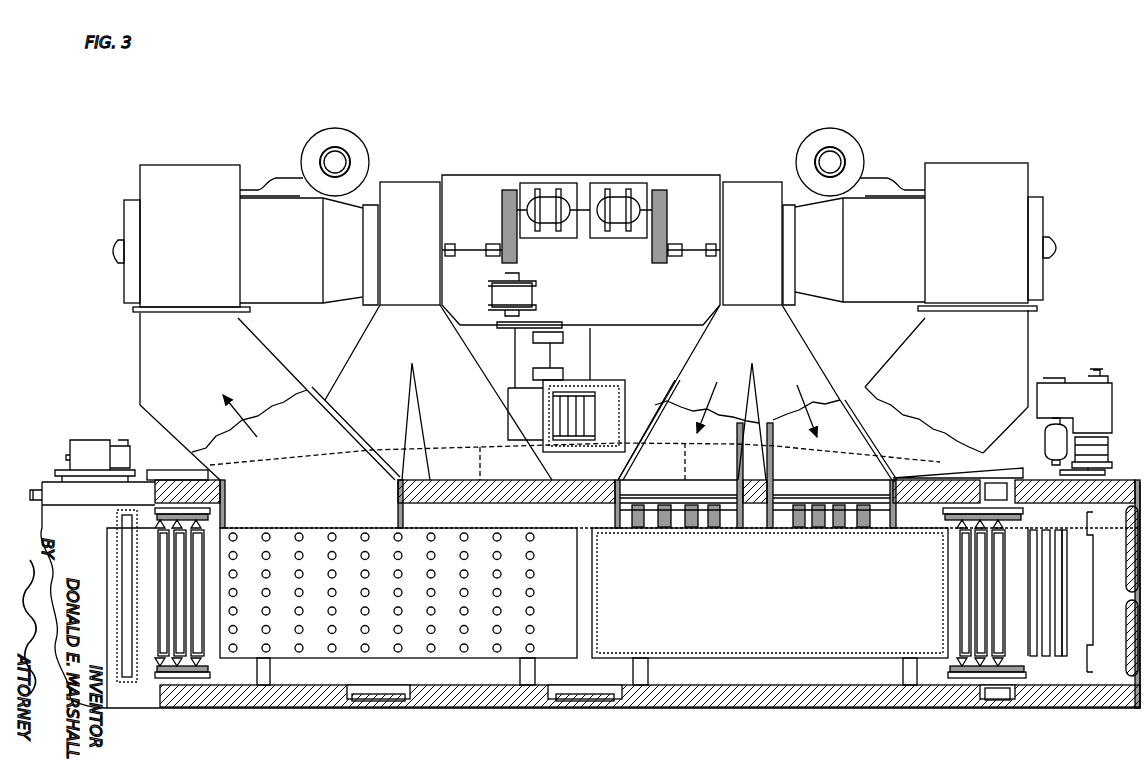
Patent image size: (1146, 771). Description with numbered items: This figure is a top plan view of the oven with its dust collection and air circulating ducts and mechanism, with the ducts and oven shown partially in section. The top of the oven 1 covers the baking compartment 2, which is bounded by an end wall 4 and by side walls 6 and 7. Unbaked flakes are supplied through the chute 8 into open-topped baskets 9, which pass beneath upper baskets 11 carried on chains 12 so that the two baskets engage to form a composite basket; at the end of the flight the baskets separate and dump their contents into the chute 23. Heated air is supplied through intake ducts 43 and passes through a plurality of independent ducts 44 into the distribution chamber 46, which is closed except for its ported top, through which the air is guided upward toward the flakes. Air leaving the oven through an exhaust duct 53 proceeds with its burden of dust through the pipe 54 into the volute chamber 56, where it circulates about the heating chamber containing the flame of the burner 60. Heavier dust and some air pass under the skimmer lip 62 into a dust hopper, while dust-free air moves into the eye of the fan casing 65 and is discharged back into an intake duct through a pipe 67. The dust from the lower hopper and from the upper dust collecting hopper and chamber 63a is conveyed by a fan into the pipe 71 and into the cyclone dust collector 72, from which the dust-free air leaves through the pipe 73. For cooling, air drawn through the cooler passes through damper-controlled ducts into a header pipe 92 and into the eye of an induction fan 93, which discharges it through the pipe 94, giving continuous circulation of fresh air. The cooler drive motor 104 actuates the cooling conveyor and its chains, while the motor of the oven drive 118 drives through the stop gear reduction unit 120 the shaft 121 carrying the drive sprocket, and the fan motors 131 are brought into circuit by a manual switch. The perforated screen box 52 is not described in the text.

The top of the oven 1 is at (148, 690).
The baking compartment 2 is at (500, 675).
The end wall 4 is at (1126, 635).
The side wall 6 is at (548, 497).
The side wall 7 is at (720, 706).
The chute 8 is at (117, 546).
The baskets 9 is at (1050, 598).
The baskets 11 is at (200, 572).
The chains 12 is at (213, 518).
The chute 23 is at (1090, 576).
The intake ducts 43 is at (662, 477).
The independent ducts 44 is at (700, 522).
The distribution chamber 46 is at (822, 641).
The perforated screen box 52 is at (440, 590).
The exhaust duct 53 is at (350, 507).
The pipe 54 is at (188, 371).
The volute chamber 56 is at (225, 265).
The burner 60 is at (125, 252).
The skimmer lip 62 is at (168, 473).
The upper dust collecting hopper and chamber 63a is at (207, 183).
The fan casing 65 is at (419, 190).
The pipe 67 is at (406, 360).
The pipe 71 is at (284, 181).
The cyclone dust collector 72 is at (336, 128).
The pipe 73 is at (350, 154).
The header pipe 92 is at (632, 446).
The induction fan 93 is at (565, 410).
The pipe 94 is at (603, 382).
The cooler drive motor 104 is at (85, 444).
The motor of the oven drive 118 is at (1045, 440).
The stop gear reduction unit 120 is at (1100, 412).
The shaft 121 is at (1106, 466).
The fan motors 131 is at (615, 193).